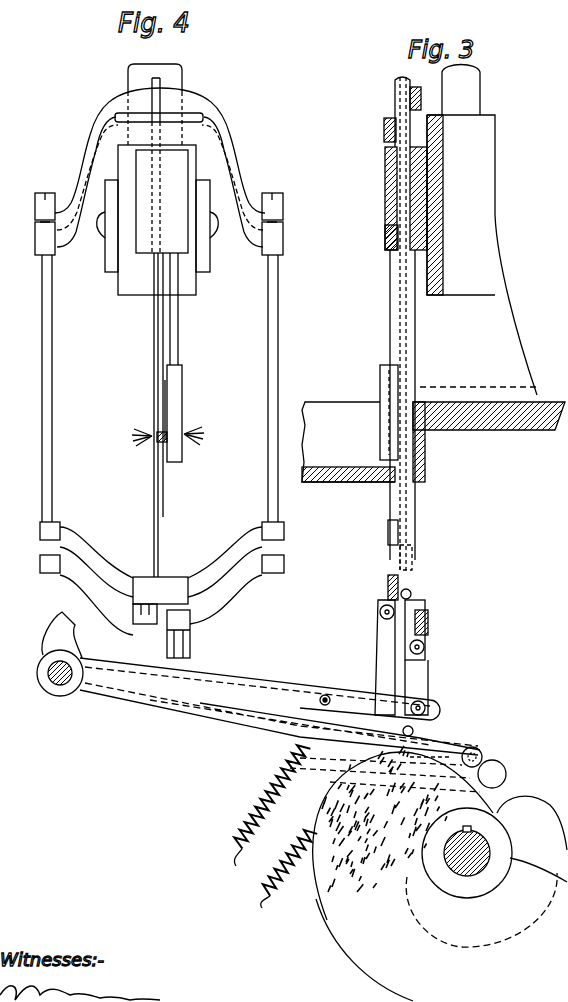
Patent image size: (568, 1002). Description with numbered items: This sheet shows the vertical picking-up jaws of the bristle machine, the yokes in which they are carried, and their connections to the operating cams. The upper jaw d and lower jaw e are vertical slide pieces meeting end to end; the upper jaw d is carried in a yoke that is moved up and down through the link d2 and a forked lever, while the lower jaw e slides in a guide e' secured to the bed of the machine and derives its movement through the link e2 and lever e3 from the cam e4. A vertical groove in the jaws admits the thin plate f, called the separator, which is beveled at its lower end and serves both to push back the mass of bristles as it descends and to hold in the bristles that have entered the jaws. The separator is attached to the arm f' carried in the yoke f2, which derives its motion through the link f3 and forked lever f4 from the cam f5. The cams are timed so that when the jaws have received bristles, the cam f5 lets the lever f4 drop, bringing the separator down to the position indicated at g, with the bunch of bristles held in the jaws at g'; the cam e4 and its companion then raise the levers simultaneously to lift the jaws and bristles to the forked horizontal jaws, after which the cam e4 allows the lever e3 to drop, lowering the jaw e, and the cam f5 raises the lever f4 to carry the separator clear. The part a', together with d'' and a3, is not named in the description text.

In FIG. 4, the upper jaw d is at (155, 158).
In FIG. 3, the upper jaw d is at (405, 323).
In FIG. 4, the magnet frame a' is at (159, 373).
In FIG. 4, the yoke f2 is at (159, 368).
In FIG. 4, the lower jaw e is at (163, 415).
In FIG. 3, the lower jaw e is at (406, 571).
In FIG. 4, the thin plate f is at (146, 324).
In FIG. 4, the arm f' is at (177, 413).
In FIG. 4, the bunch of bristles g' is at (158, 441).
In FIG. 4, the position of separator g is at (168, 455).
In FIG. 3, the position of separator g is at (430, 761).
In FIG. 3, the guide e' is at (409, 526).
In FIG. 3, the link d'' is at (423, 619).
In FIG. 3, the link e2 is at (414, 622).
In FIG. 3, the link f3 is at (386, 645).
In FIG. 3, the link d2 is at (419, 687).
In FIG. 3, the lever e3 is at (450, 746).
In FIG. 3, the roller a3 is at (492, 774).
In FIG. 3, the forked lever f4 is at (372, 797).
In FIG. 3, the cam e4 is at (299, 844).
In FIG. 3, the cam f5 is at (532, 823).